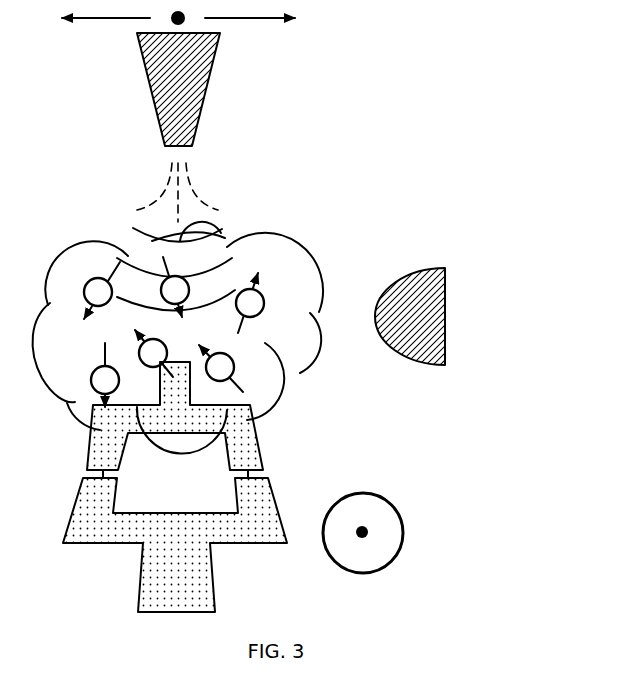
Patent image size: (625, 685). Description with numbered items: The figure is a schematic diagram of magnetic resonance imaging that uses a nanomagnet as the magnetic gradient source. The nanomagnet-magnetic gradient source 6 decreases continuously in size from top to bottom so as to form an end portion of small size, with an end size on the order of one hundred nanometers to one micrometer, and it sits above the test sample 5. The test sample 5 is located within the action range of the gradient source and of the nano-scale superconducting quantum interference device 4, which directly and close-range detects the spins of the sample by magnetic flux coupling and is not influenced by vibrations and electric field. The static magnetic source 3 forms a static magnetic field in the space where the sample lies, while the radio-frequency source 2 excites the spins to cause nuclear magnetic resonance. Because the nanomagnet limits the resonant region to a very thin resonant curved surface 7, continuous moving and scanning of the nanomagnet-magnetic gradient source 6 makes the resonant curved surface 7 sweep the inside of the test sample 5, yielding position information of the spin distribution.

The radio-frequency source 2 is at (442, 322).
The static magnetic source 3 is at (390, 531).
The nano-scale superconducting quantum interference device 4 is at (268, 490).
The test sample 5 is at (318, 281).
The nanomagnet-magnetic gradient source 6 is at (203, 100).
The resonant curved surface 7 is at (232, 258).